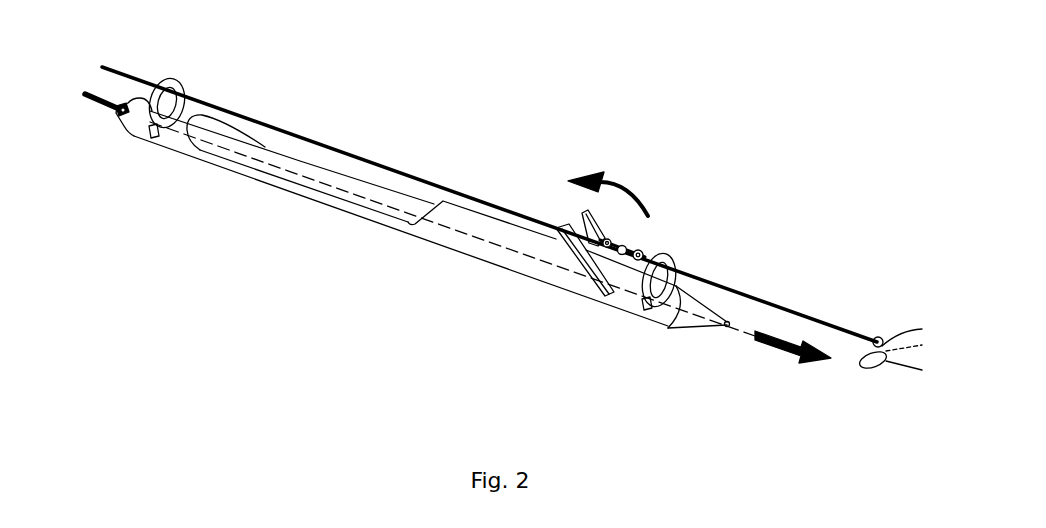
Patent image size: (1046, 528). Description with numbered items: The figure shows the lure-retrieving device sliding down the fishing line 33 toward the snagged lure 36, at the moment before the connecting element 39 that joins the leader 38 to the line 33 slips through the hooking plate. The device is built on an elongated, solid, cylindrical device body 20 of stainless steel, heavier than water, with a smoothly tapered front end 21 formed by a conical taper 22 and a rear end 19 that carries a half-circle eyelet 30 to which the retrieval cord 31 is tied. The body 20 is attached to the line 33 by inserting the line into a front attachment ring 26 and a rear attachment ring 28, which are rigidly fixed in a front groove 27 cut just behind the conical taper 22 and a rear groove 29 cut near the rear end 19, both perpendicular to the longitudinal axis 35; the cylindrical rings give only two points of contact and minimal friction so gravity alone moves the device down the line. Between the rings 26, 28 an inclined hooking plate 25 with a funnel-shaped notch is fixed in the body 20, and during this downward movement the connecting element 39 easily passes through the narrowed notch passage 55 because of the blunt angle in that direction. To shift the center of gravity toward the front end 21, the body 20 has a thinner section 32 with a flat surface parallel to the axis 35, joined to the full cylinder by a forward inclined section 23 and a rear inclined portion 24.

The rear end 19 is at (140, 120).
The device body 20 is at (470, 238).
The front end 21 is at (727, 327).
The conical taper 22 is at (683, 317).
The forward inclined section 23 is at (443, 203).
The rear inclined portion 24 is at (200, 127).
The hooking plate 25 is at (593, 265).
The front attachment ring 26 is at (666, 253).
The front groove 27 is at (647, 302).
The rear attachment ring 28 is at (178, 81).
The rear groove 29 is at (153, 130).
The eyelet 30 is at (113, 115).
The retrieval cord 31 is at (93, 97).
The thinner section 32 is at (304, 178).
The fishing line 33 is at (298, 173).
The longitudinal axis 35 is at (338, 184).
The snagged lure 36 is at (877, 367).
The leader 38 is at (773, 303).
The connecting element 39 is at (598, 280).
The notch passage 55 is at (598, 247).